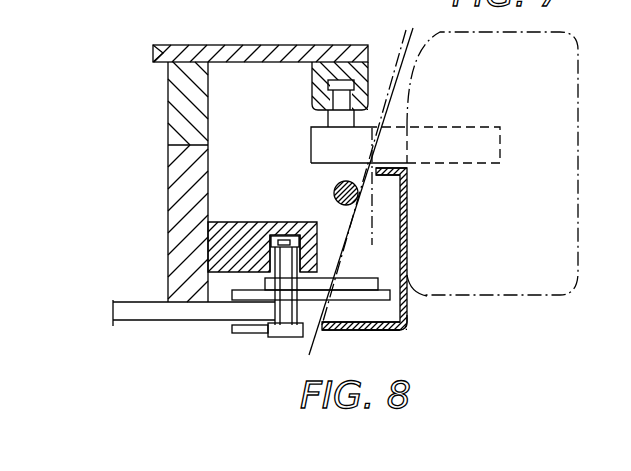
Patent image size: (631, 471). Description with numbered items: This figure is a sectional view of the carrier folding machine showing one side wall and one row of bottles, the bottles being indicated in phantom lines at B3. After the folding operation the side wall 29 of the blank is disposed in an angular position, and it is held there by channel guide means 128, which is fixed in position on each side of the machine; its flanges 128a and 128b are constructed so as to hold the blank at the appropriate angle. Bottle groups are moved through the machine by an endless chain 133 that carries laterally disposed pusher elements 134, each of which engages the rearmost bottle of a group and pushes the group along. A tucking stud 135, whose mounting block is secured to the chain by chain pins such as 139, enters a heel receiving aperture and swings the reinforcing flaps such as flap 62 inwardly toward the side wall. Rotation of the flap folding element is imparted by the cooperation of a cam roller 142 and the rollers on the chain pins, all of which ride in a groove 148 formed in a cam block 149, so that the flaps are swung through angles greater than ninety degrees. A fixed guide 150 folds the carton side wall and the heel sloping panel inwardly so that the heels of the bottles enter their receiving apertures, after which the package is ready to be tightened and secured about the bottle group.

The side wall 29 is at (401, 58).
The flap 62 is at (380, 330).
The channel guide means 128 is at (410, 302).
The flange 128a is at (383, 173).
The flange 128b is at (337, 330).
The endless chain 133 is at (343, 100).
The pusher element 134 is at (478, 127).
The tucking stud 135 is at (352, 286).
The chain pin 139 is at (410, 322).
The cam roller 142 is at (268, 240).
The groove 148 is at (282, 234).
The cam block 149 is at (226, 249).
The fixed guide 150 is at (337, 186).
The bottles B3 is at (534, 234).